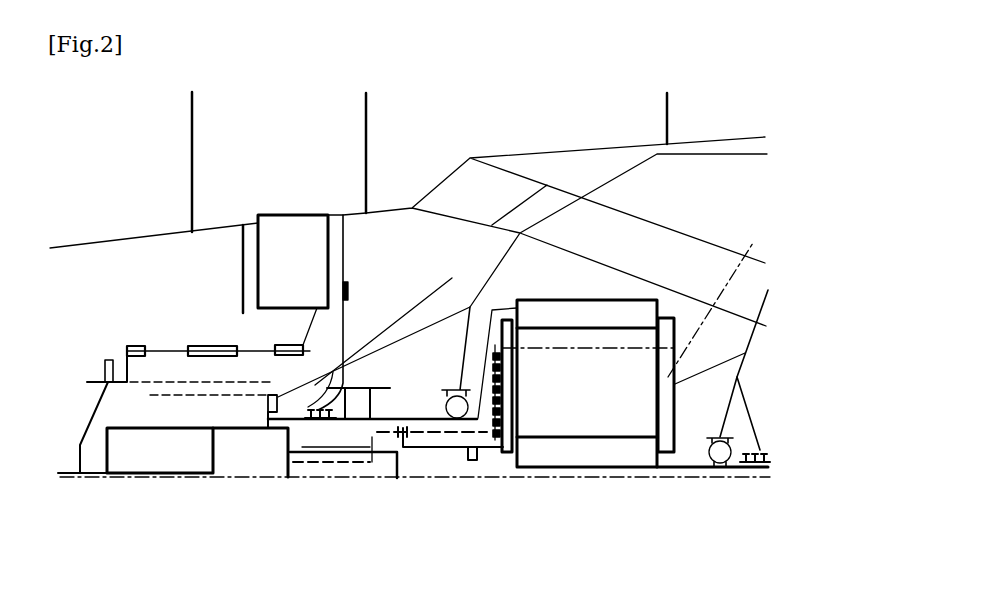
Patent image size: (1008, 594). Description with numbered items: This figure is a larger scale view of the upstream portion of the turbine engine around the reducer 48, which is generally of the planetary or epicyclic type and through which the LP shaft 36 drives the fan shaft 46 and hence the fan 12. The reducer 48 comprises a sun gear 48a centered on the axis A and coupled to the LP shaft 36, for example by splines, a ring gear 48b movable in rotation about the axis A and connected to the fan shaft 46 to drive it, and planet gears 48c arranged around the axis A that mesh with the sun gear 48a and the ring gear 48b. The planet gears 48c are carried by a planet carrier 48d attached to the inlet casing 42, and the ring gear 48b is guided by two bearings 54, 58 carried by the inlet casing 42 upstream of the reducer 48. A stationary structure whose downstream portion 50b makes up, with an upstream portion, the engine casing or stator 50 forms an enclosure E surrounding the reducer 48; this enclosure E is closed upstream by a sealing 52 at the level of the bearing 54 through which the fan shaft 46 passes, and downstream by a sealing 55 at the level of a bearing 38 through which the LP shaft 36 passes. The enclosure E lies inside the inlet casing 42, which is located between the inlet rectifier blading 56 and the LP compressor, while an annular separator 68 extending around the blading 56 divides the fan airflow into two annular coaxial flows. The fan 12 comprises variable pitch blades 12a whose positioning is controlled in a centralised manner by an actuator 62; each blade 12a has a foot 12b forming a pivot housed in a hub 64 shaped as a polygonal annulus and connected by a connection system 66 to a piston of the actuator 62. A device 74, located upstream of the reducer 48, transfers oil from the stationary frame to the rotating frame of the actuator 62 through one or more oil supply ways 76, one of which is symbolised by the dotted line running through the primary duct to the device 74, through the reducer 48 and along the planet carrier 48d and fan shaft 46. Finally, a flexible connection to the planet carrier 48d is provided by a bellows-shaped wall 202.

The fan 12 is at (176, 140).
The variable pitch blades 12a is at (362, 136).
The foot 12b is at (295, 228).
The inlet casing 42 is at (784, 178).
The hub 64 is at (240, 287).
The connection system 66 is at (165, 347).
The axis A is at (87, 473).
The actuator 62 is at (170, 487).
The device for transferring oil 74 is at (384, 464).
The bellows-shaped wall 202 is at (437, 448).
The fan shaft 46 is at (347, 327).
The sealing 52 is at (360, 398).
The bearing 54 is at (391, 319).
The bearing 58 is at (442, 405).
The annular separator 68 is at (470, 157).
The inlet rectifier blading 56 is at (505, 182).
The reducer 48 is at (618, 496).
The sun gear 48a is at (553, 455).
The ring gear 48b is at (607, 310).
The planet gears 48c is at (623, 368).
The planet carrier 48d is at (503, 452).
The oil supply ways 76 is at (552, 368).
The enclosure E is at (738, 329).
The engine casing or stator 50 is at (747, 403).
The downstream portion 50b is at (748, 413).
The LP shaft 36 is at (687, 467).
The bearing 38 is at (720, 467).
The sealing 55 is at (773, 460).